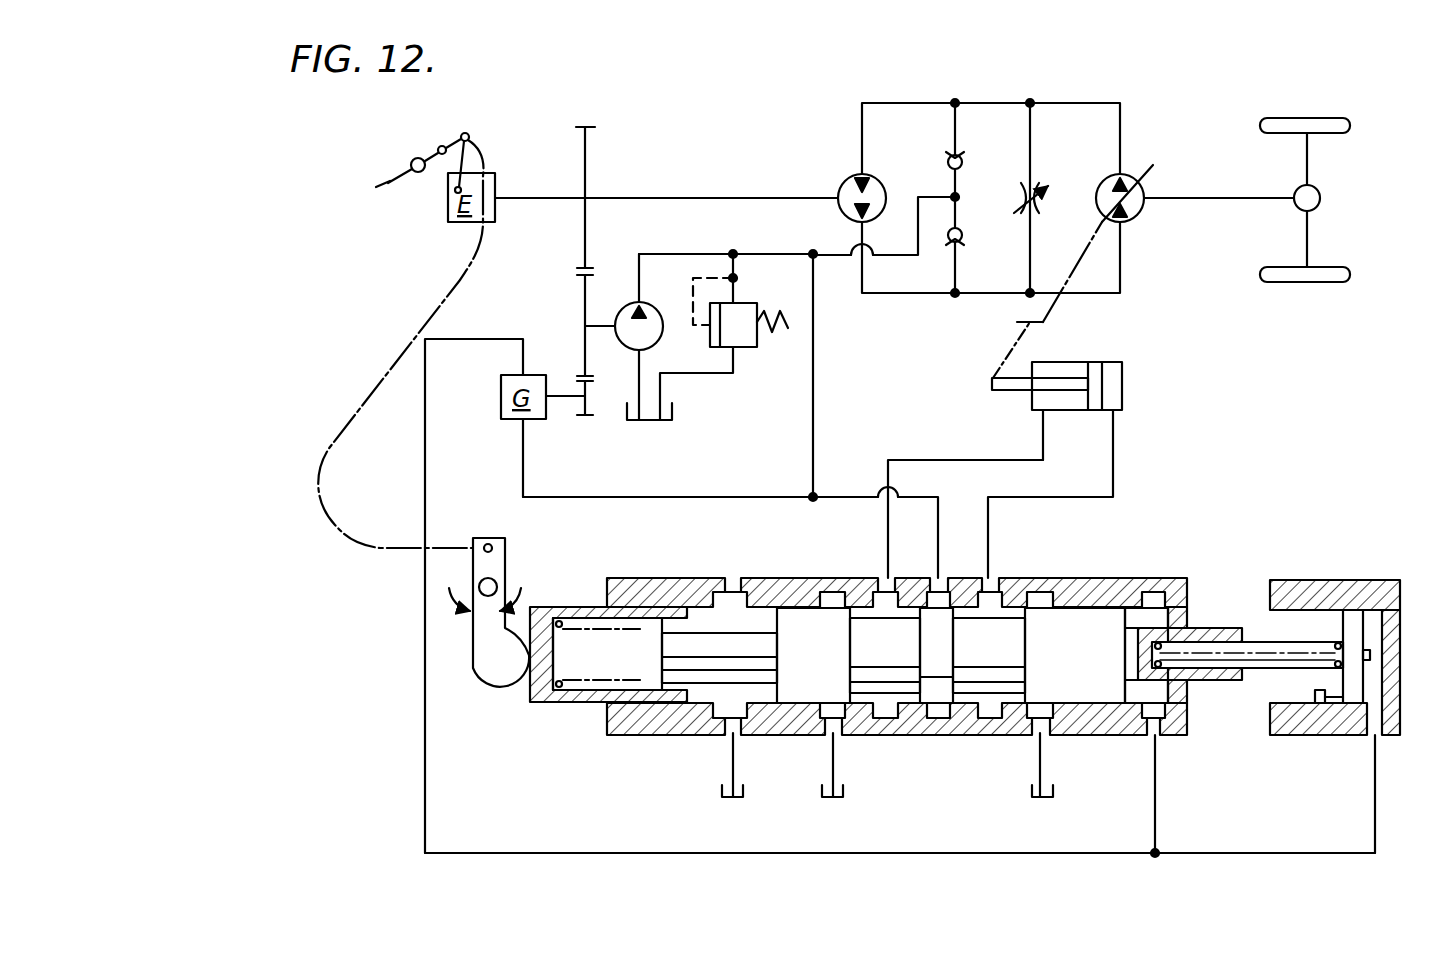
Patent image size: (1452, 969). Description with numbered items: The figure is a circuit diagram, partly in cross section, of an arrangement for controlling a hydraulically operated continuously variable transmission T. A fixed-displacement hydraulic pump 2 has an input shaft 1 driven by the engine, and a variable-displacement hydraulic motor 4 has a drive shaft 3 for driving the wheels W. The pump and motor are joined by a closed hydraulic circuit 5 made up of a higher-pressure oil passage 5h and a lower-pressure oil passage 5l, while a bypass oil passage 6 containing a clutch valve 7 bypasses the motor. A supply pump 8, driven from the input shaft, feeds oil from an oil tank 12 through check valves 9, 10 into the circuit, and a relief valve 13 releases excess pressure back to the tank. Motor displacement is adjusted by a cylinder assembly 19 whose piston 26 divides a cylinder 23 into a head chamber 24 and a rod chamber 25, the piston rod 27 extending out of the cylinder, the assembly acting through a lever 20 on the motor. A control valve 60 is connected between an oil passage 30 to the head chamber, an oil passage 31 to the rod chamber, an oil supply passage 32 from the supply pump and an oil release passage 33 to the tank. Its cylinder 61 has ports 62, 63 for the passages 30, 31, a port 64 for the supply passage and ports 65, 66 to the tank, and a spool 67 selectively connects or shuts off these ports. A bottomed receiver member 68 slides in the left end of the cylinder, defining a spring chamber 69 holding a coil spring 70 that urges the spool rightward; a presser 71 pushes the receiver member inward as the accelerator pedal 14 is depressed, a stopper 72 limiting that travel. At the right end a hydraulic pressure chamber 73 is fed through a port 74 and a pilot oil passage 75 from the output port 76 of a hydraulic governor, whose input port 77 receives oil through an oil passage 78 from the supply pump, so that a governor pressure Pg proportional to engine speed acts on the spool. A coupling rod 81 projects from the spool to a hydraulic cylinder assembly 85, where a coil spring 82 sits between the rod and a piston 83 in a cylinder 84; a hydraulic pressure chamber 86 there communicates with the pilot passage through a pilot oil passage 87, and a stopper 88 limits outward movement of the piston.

The input shaft 1 is at (686, 198).
The hydraulic pump 2 is at (840, 190).
The drive shaft 3 is at (1208, 198).
The hydraulic motor 4 is at (1132, 214).
The closed hydraulic circuit 5 is at (1085, 103).
The lower-pressure oil passage 5l is at (902, 103).
The higher-pressure oil passage 5h is at (913, 293).
The bypass oil passage 6 is at (1032, 155).
The clutch valve 7 is at (1022, 196).
The supply pump 8 is at (620, 343).
The check valve 9 is at (968, 151).
The check valve 10 is at (978, 256).
The oil tank 12 is at (672, 410).
The relief valve 13 is at (747, 350).
The accelerator pedal 14 is at (384, 183).
The cylinder assembly 19 is at (1094, 360).
The adjusting lever 20 is at (1017, 324).
The cylinder 23 is at (1075, 410).
The head chamber 24 is at (1122, 382).
The rod chamber 25 is at (1053, 362).
The piston 26 is at (1106, 366).
The piston rod 27 is at (1018, 390).
The oil passage 30 is at (1113, 456).
The oil passage 31 is at (952, 460).
The oil supply passage 32 is at (938, 521).
The oil release passage 33 is at (833, 757).
The control valve 60 is at (936, 693).
The cylinder 61 is at (780, 578).
The port 62 is at (998, 586).
The port 63 is at (880, 586).
The port 64 is at (940, 586).
The port 65 is at (1040, 703).
The port 66 is at (833, 703).
The spool 67 is at (893, 655).
The receiver member 68 is at (557, 617).
The spring chamber 69 is at (580, 692).
The coil spring 70 is at (627, 630).
The presser 71 is at (475, 634).
The stopper 72 is at (726, 602).
The hydraulic pressure chamber 73 is at (1158, 619).
The port 74 is at (1158, 731).
The pilot oil passage 75 is at (833, 853).
The output port 76 is at (525, 373).
The input port 77 is at (525, 422).
The oil passage 78 is at (636, 497).
The coupling rod 81 is at (1224, 681).
The coil spring 82 is at (1253, 642).
The piston 83 is at (1352, 610).
The cylinder 84 is at (1298, 580).
The hydraulic cylinder assembly 85 is at (1355, 668).
The hydraulic pressure chamber 86 is at (1372, 636).
The pilot oil passage 87 is at (1265, 853).
The stopper 88 is at (1314, 696).
The wheels W is at (1295, 125).
The continuously variable transmission T is at (1140, 108).
The hydraulic governor pressure Pg is at (978, 853).